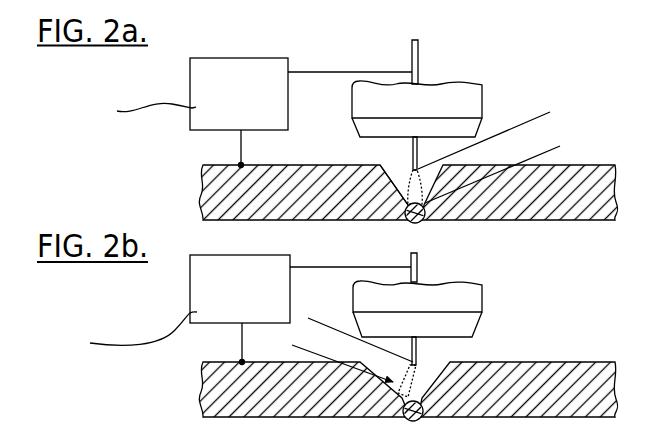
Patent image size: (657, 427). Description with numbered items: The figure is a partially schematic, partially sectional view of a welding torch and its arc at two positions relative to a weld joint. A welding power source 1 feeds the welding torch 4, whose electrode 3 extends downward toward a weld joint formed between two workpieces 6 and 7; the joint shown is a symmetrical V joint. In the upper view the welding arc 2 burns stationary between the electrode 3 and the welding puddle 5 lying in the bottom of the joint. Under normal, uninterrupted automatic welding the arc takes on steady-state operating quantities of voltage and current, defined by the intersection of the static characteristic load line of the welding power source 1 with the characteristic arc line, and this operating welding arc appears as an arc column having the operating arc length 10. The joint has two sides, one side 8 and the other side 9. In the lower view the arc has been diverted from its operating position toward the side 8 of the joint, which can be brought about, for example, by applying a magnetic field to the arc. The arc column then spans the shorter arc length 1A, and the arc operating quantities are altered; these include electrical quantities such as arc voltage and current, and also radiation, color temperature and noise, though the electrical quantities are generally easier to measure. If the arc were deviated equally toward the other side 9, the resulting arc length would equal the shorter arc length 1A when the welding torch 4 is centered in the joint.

In FIG. 2A, the welding power source 1 is at (243, 58).
In FIG. 2B, the welding power source 1 is at (190, 293).
In FIG. 2A, the welding arc 2 is at (410, 177).
In FIG. 2A, the electrode 3 is at (418, 72).
In FIG. 2A, the welding torch 4 is at (482, 94).
In FIG. 2A, the welding puddle 5 is at (424, 206).
In FIG. 2A, the workpiece 6 is at (363, 220).
In FIG. 2A, the workpiece 7 is at (497, 220).
In FIG. 2A, the side of weld joint 8 is at (395, 188).
In FIG. 2B, the side of weld joint 8 is at (417, 400).
In FIG. 2A, the other side of weld joint 9 is at (426, 203).
In FIG. 2A, the operating arc length 10 is at (520, 96).
In FIG. 2B, the shorter arc length 1A is at (297, 362).